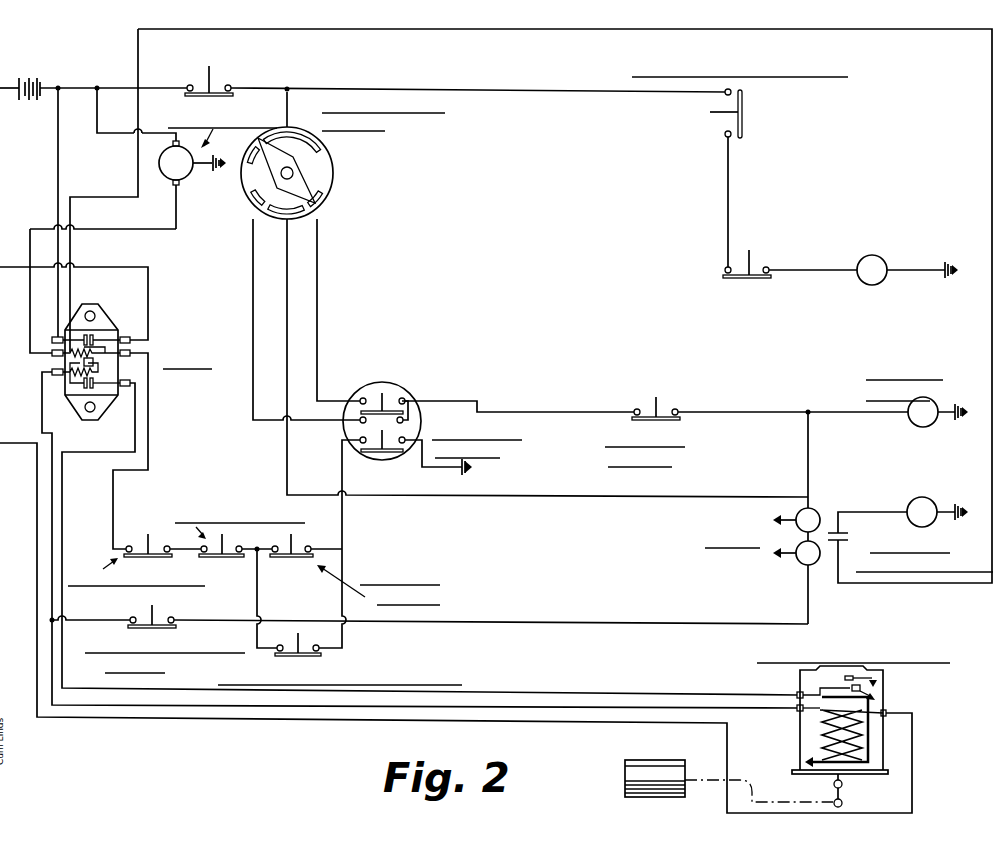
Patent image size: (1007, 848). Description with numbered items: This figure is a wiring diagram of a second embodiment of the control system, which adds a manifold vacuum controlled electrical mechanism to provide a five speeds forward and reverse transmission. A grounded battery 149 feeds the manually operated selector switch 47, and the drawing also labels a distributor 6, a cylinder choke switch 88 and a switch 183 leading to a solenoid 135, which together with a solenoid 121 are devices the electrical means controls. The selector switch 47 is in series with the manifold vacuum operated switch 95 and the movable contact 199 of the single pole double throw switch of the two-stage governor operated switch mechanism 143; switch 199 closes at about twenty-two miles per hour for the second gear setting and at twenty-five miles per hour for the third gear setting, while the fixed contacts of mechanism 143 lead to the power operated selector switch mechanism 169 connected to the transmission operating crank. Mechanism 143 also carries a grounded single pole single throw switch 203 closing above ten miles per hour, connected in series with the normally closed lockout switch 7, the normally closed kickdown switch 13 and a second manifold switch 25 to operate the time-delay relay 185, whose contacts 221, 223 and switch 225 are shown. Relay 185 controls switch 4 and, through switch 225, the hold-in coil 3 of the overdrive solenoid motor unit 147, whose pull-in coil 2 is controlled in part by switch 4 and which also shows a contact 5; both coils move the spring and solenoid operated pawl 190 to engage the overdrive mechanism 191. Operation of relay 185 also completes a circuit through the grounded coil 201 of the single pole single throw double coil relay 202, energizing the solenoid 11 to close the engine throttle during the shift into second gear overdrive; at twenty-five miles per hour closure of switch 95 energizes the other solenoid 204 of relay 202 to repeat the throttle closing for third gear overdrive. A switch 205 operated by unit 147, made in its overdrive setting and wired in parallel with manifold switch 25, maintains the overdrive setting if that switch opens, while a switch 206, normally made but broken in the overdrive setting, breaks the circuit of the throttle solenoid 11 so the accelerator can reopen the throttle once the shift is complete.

The battery 149 is at (38, 74).
The selector switch 47 is at (219, 82).
The distributor 6 is at (187, 177).
The power operated selector switch mechanism 169 is at (330, 167).
The cylinder choke switch 88 is at (742, 120).
The solenoid 135 is at (876, 258).
The switch 183 is at (746, 281).
The relay contact 221 is at (93, 333).
The time-delay relay 185 is at (132, 335).
The relay armature contact 223 is at (100, 358).
The switch 225 is at (95, 384).
The single pole double throw switch 199 is at (388, 391).
The governor operated switch mechanism 143 is at (432, 416).
The single pole single throw switch 203 is at (376, 464).
The manifold vacuum operated switch 95 is at (646, 405).
The solenoid 121 is at (917, 419).
The solenoid 204 is at (801, 510).
The double coil relay 202 is at (823, 528).
The solenoid 11 is at (922, 504).
The coil 201 is at (803, 561).
The kickdown switch 13 is at (141, 545).
The lockout switch 7 is at (222, 560).
The manifold switch 25 is at (288, 565).
The switch 206 is at (144, 614).
The switch 205 is at (323, 656).
The solenoid contact 5 is at (849, 677).
The switch 4 is at (871, 690).
The overdrive solenoid motor unit 147 is at (866, 718).
The pull-in coil 2 is at (822, 735).
The hold-in coil 3 is at (856, 748).
The pawl 190 is at (845, 781).
The overdrive mechanism 191 is at (647, 777).